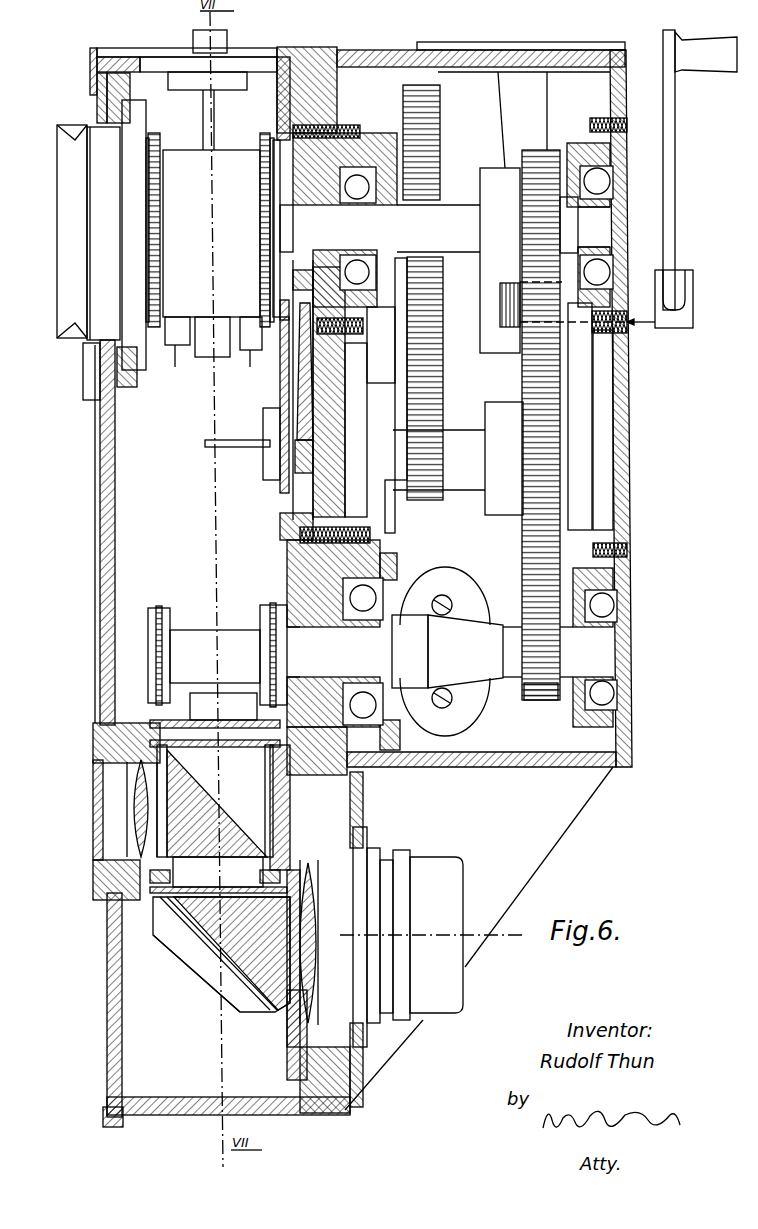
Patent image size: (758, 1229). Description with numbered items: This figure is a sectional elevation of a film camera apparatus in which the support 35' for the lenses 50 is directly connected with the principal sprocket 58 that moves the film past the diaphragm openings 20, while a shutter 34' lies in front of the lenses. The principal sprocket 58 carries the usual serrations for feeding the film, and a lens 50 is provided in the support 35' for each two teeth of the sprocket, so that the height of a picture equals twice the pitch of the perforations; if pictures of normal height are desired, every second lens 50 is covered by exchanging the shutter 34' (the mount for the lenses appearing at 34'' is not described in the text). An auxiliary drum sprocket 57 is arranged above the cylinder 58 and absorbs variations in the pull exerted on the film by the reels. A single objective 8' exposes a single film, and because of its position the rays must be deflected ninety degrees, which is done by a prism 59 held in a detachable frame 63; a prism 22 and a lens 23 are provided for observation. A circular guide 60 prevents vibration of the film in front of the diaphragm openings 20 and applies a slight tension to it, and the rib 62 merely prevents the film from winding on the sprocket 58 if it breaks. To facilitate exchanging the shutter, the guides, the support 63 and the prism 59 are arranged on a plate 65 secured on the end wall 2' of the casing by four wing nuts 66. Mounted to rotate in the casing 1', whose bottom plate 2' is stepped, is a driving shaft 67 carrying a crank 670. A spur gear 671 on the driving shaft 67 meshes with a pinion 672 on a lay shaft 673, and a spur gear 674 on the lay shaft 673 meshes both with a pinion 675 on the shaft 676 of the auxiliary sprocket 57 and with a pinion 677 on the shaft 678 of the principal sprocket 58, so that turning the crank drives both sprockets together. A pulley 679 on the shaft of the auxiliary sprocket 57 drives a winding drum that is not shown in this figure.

The casing 1' is at (107, 532).
The end wall 2' is at (357, 592).
The objective 8' is at (421, 937).
The diaphragm openings 20 is at (196, 893).
The prism 22 is at (237, 833).
The lens 23 is at (138, 793).
The shutter 34' is at (265, 404).
The lens mount 34'' is at (278, 1035).
The support 35' is at (341, 815).
The lenses 50 is at (300, 375).
The auxiliary drum sprocket 57 is at (228, 158).
The principal sprocket 58 is at (228, 632).
The prism 59 is at (225, 975).
The circular guide 60 is at (226, 740).
The rib 62 is at (197, 709).
The detachable frame 63 is at (192, 933).
The plate 65 is at (290, 1067).
The wing nuts 66 is at (213, 440).
The driving shaft 67 is at (643, 283).
The crank 670 is at (672, 185).
The spur gear 671 is at (427, 131).
The pinion 672 is at (425, 495).
The lay shaft 673 is at (462, 438).
The spur gear 674 is at (540, 570).
The pinion 675 is at (542, 160).
The shaft 676 is at (458, 245).
The pinion 677 is at (535, 690).
The shaft 678 is at (470, 665).
The pulley 679 is at (58, 256).